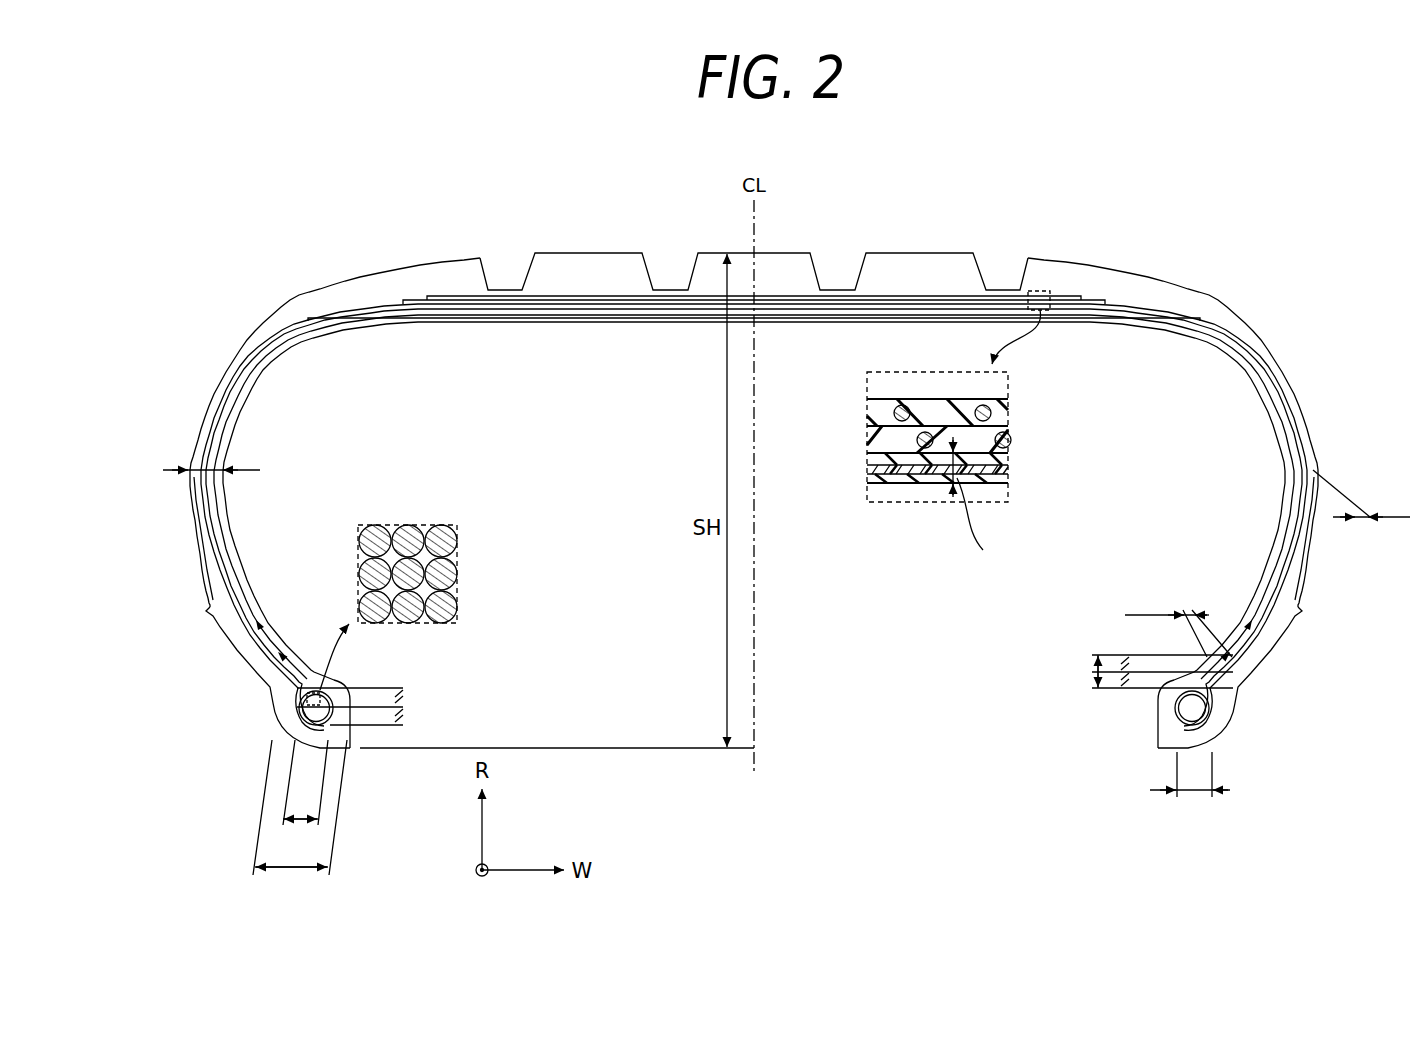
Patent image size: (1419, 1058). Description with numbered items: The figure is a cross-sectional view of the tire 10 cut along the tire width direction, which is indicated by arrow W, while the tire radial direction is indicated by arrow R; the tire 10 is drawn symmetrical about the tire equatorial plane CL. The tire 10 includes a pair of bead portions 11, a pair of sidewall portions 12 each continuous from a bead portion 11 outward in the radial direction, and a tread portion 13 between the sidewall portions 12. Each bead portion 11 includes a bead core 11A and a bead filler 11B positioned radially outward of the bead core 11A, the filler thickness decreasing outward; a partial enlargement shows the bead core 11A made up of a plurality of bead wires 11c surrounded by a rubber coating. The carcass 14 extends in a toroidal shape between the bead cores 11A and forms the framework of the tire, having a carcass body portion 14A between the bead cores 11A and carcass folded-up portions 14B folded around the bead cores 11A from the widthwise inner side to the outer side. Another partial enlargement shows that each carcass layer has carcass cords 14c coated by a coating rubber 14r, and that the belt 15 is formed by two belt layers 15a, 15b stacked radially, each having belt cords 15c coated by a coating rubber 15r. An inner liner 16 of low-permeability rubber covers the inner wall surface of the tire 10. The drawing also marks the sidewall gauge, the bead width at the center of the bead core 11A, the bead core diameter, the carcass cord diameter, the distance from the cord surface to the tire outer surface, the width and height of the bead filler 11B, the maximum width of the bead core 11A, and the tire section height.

The tire 10 is at (376, 193).
The bead portion 11 is at (250, 674).
The bead core 11A is at (299, 707).
The bead filler 11B is at (316, 689).
The bead wires 11c is at (465, 573).
The sidewall portion 12 is at (186, 465).
The tread portion 13 is at (880, 251).
The carcass 14 is at (1014, 467).
The carcass body portion 14A is at (1227, 632).
The carcass folded-up portion 14B is at (1243, 648).
The carcass cord 14c is at (900, 472).
The coating rubber 14r is at (870, 477).
The belt 15 is at (950, 296).
The belt layer 15a is at (1014, 410).
The belt layer 15b is at (1014, 438).
The belt cord 15c is at (893, 409).
The coating rubber 15r is at (922, 398).
The inner liner 16 is at (1254, 363).